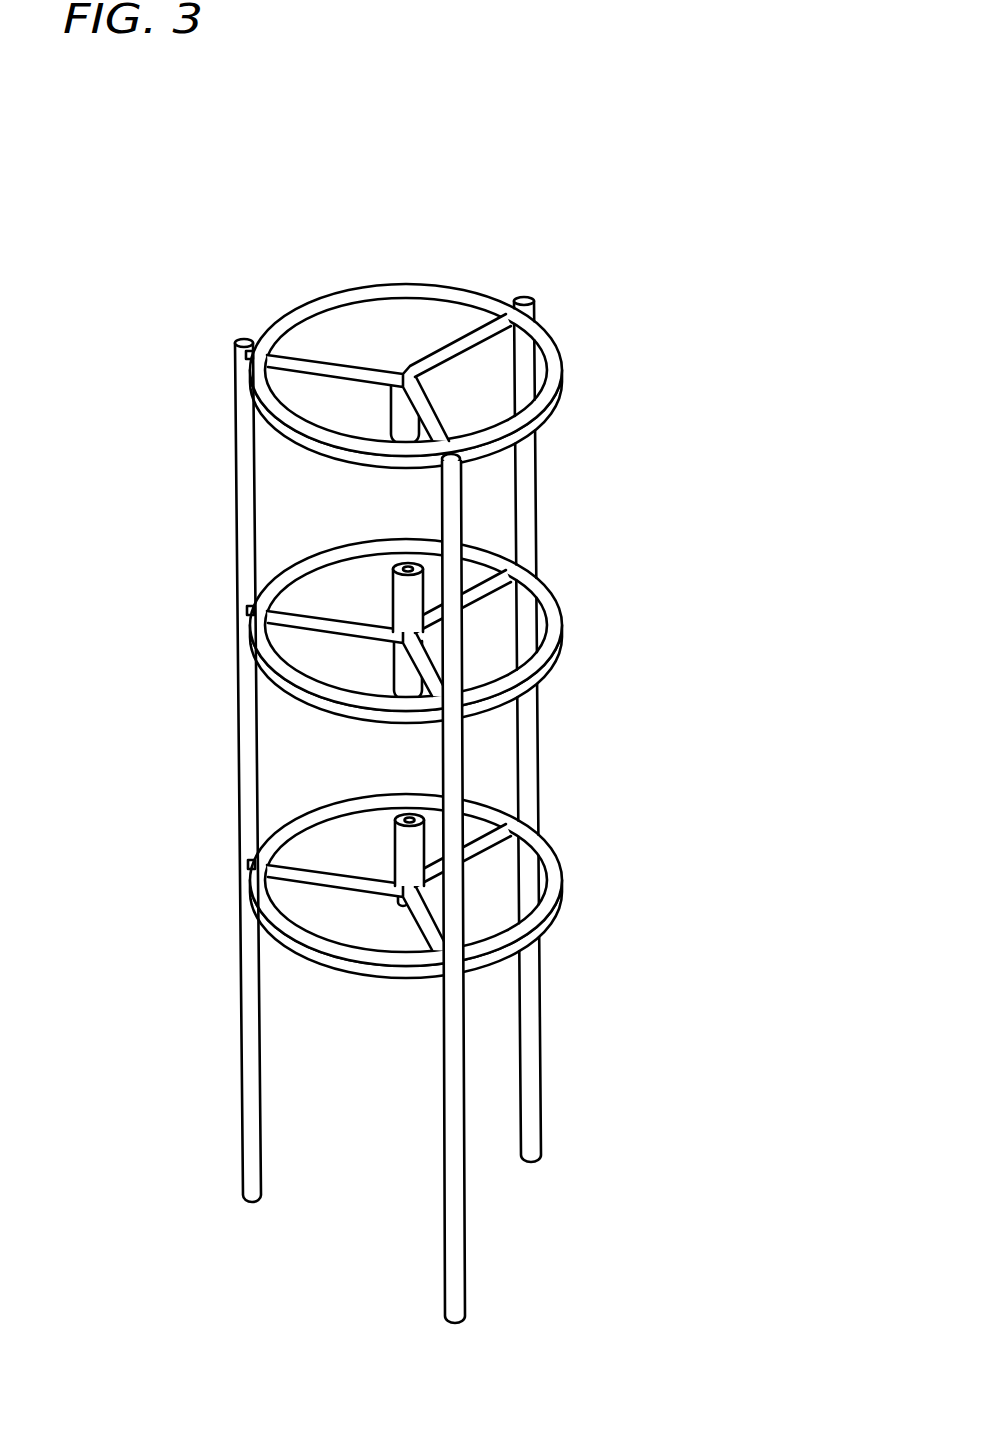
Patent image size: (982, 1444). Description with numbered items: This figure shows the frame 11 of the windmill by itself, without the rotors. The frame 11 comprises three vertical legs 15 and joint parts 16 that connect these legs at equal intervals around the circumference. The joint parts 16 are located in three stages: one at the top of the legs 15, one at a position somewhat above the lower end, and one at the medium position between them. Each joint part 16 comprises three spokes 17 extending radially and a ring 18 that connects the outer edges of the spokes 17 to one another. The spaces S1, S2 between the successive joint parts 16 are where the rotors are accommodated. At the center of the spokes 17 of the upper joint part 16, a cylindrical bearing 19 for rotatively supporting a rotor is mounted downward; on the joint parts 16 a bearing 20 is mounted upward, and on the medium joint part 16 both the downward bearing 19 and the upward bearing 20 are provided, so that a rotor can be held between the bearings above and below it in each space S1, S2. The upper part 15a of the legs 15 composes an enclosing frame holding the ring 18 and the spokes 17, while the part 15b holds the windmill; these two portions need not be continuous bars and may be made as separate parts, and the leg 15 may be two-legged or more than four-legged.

The frame 11 is at (534, 244).
The leg 15 is at (235, 352).
The upper part of leg 15a is at (227, 875).
The part holding the windmill 15b is at (217, 360).
The joint part 16 is at (406, 606).
The spoke 17 is at (425, 403).
The ring 18 is at (353, 291).
The cylindrical bearing 19 is at (400, 419).
The bearing 20 is at (398, 600).
The space S1 is at (513, 531).
The space S2 is at (503, 757).